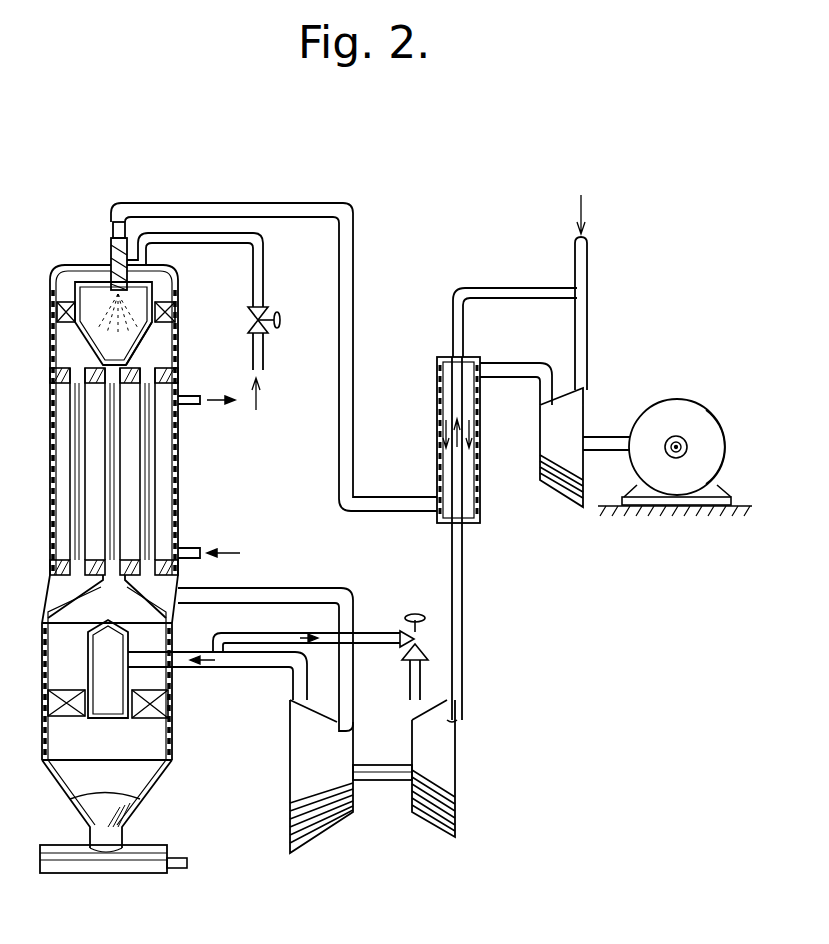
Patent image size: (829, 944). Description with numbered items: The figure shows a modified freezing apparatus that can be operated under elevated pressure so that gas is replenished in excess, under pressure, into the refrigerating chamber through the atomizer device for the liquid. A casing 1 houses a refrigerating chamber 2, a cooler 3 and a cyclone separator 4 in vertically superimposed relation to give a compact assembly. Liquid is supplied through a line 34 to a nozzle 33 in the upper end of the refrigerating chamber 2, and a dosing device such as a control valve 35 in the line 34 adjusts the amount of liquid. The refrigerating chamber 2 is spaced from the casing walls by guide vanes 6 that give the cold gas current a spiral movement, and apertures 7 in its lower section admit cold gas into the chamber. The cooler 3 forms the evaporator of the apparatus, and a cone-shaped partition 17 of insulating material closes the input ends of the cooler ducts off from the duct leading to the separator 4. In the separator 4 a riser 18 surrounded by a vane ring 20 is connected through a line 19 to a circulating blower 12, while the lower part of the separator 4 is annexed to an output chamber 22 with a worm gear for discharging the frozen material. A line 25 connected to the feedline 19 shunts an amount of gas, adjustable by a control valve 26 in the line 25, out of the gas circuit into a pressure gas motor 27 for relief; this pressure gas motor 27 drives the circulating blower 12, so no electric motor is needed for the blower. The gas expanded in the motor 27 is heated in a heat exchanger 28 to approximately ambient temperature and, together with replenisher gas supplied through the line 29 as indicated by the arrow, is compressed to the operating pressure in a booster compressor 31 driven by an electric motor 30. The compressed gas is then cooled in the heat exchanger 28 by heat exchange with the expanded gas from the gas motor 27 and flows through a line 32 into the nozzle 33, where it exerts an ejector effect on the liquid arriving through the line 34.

The casing 1 is at (180, 466).
The refrigerating chamber 2 is at (152, 297).
The cooler 3 is at (168, 499).
The cyclone separator 4 is at (124, 720).
The guide vanes 6 is at (175, 317).
The apertures 7 is at (140, 340).
The circulating blower 12 is at (290, 787).
The cone-shaped partition 17 is at (135, 597).
The riser 18 is at (124, 679).
The line 19 is at (256, 667).
The vane ring 20 is at (168, 712).
The chamber 22 is at (147, 862).
The line 25 is at (222, 633).
The control valve 26 is at (402, 626).
The pressure gas motor 27 is at (418, 812).
The heat exchanger 28 is at (478, 513).
The line 29 is at (583, 270).
The electric motor 30 is at (700, 412).
The booster compressor 31 is at (575, 418).
The line 32 is at (353, 434).
The nozzle 33 is at (110, 252).
The line 34 is at (212, 240).
The control valve 35 is at (268, 330).